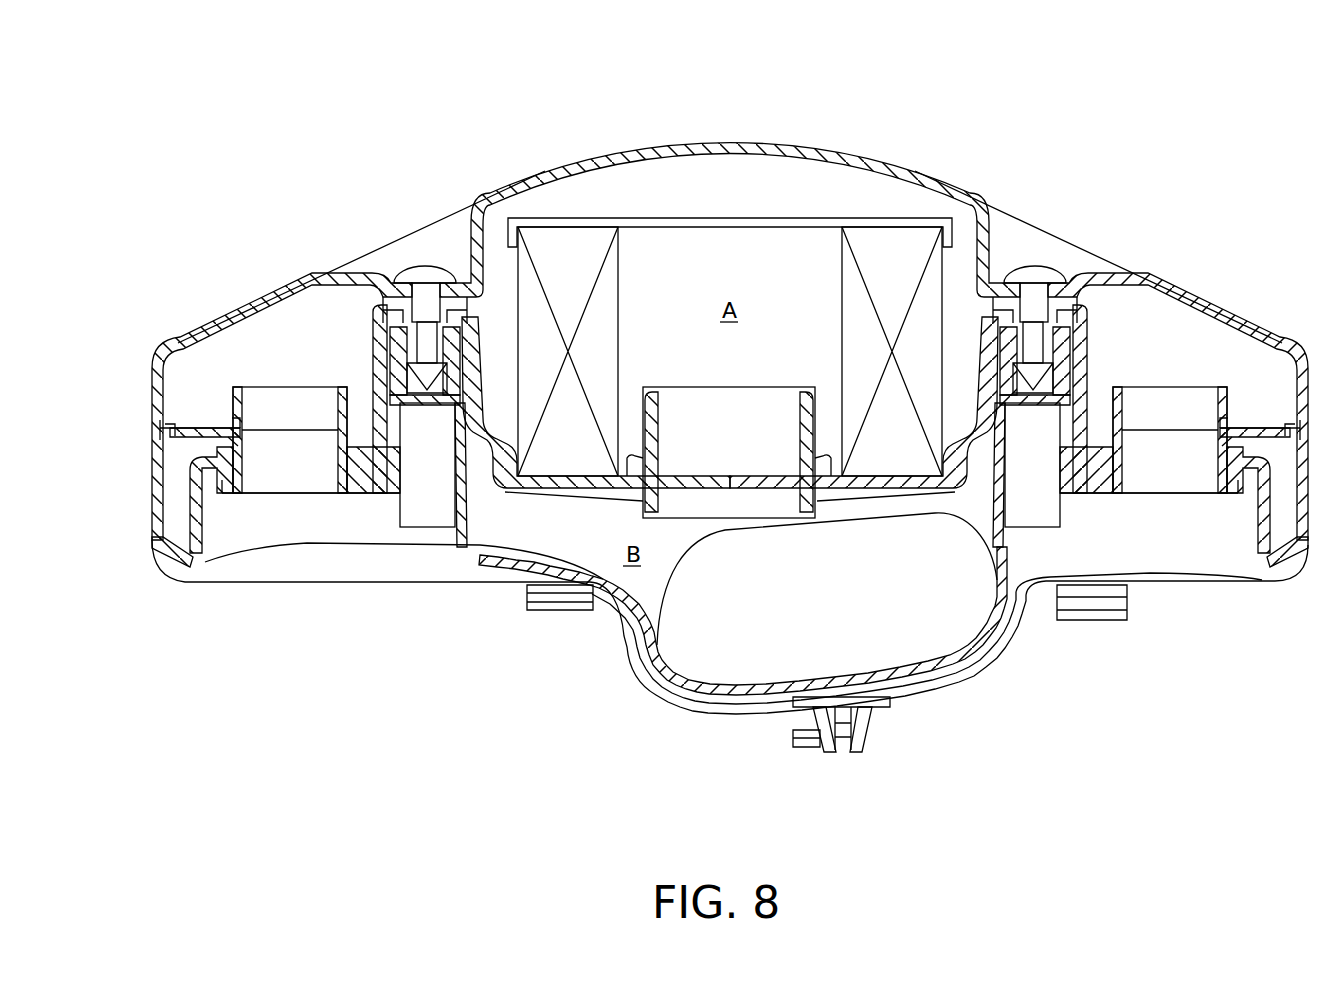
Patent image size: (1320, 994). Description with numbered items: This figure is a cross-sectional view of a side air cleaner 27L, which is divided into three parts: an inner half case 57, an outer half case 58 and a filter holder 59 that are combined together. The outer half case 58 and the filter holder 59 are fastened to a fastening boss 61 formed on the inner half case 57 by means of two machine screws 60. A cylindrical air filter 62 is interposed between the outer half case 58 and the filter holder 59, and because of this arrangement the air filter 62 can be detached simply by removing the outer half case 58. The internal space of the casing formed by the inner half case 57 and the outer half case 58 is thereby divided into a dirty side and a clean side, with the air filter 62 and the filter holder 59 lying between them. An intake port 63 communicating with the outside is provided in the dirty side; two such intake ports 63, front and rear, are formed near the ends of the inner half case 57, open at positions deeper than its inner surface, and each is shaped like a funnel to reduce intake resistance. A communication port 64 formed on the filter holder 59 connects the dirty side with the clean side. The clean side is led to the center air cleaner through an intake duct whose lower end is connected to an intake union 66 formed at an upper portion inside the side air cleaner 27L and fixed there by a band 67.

The side air cleaner 27L is at (666, 109).
The inner half case 57 is at (150, 480).
The outer half case 58 is at (253, 290).
The filter holder 59 is at (205, 427).
The machine screw 60 is at (425, 268).
The fastening boss 61 is at (400, 346).
The air filter 62 is at (890, 240).
The intake port 63 is at (289, 478).
The communication port 64 is at (733, 490).
The intake union 66 is at (728, 700).
The band 67 is at (867, 712).